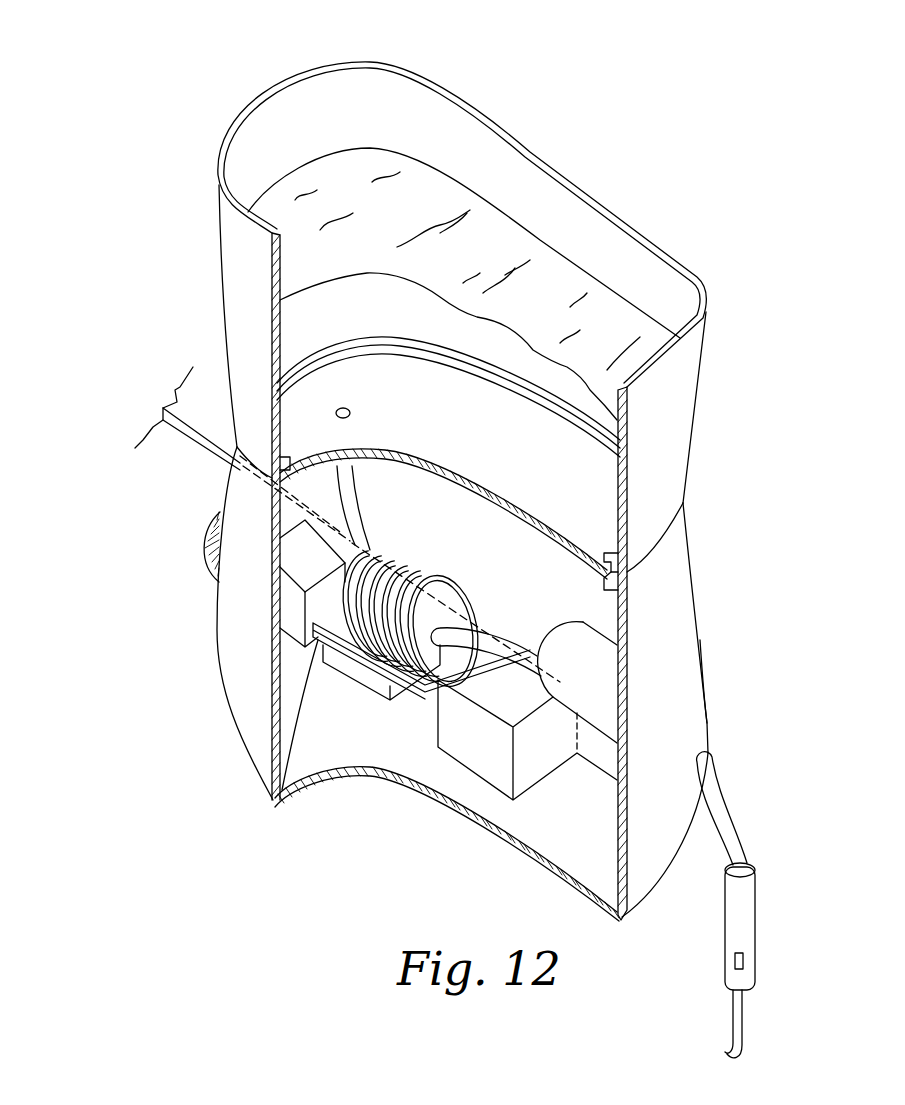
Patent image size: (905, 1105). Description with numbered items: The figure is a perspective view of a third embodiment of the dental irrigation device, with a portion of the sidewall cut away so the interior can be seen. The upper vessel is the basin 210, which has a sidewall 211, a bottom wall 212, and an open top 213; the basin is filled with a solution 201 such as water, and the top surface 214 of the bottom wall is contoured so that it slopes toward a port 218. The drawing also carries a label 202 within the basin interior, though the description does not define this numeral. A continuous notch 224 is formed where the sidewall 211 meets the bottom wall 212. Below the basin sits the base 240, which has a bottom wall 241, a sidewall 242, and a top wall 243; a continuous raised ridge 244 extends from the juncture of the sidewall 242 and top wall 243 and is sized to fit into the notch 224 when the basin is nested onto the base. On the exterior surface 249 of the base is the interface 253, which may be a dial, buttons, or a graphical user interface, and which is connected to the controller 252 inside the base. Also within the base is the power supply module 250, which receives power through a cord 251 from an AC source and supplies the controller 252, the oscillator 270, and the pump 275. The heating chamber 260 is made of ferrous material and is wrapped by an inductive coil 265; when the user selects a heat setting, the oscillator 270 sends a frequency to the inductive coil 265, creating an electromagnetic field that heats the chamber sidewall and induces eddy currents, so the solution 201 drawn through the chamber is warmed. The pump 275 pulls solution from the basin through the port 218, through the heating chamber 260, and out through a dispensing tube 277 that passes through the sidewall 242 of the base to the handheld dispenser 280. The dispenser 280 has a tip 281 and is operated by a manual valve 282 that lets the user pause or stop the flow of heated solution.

The solution 201 is at (632, 102).
The cushion material 202 is at (441, 218).
The basin 210 is at (303, 72).
The sidewall 211 is at (336, 407).
The bottom wall 212 is at (383, 363).
The open top 213 is at (505, 74).
The top surface 214 is at (464, 427).
The port 218 is at (293, 383).
The notch 224 is at (620, 570).
The base 240 is at (697, 570).
The bottom wall 241 is at (351, 751).
The sidewall 242 is at (703, 727).
The top wall 243 is at (622, 392).
The raised ridge 244 is at (620, 583).
The exterior surface 249 is at (271, 663).
The power supply module 250 is at (438, 747).
The cord 251 is at (163, 423).
The controller 252 is at (288, 647).
The interface 253 is at (203, 540).
The heating chamber 260 is at (335, 606).
The inductive coil 265 is at (337, 578).
The oscillator 270 is at (387, 700).
The pump 275 is at (608, 660).
The dispensing tube 277 is at (740, 800).
The dispenser 280 is at (755, 917).
The tip 281 is at (743, 1032).
The manual valve 282 is at (743, 960).